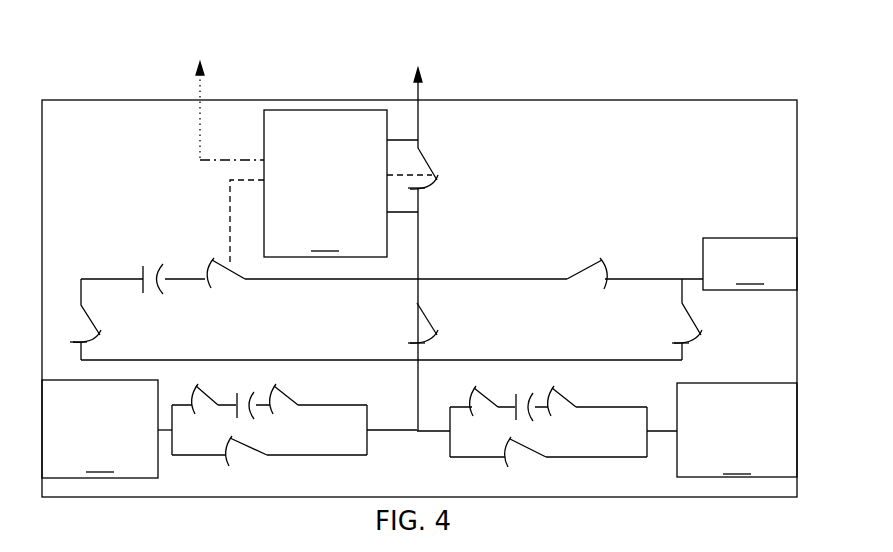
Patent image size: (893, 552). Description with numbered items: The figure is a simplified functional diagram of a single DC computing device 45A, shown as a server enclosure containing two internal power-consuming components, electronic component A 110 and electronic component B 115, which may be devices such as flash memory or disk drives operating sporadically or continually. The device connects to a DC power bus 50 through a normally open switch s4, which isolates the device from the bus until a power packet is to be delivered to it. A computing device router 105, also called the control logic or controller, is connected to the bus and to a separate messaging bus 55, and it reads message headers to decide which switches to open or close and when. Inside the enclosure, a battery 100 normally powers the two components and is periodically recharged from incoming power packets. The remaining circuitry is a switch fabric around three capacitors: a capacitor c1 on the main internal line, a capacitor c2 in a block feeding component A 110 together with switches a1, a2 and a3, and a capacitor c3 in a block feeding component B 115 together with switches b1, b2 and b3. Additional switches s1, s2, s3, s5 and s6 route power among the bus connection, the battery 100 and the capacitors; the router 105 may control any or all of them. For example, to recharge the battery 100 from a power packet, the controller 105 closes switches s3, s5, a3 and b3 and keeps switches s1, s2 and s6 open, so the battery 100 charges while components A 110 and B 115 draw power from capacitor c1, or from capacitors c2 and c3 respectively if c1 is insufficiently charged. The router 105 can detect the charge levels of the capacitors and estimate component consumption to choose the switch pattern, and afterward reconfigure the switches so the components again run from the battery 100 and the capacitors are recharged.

The computing device 45A is at (726, 139).
The DC power bus 50 is at (432, 80).
The messaging bus 55 is at (178, 134).
The computing device router 105 is at (341, 183).
The battery 100 is at (750, 264).
The electronic component A 110 is at (107, 429).
The electronic component B 115 is at (737, 430).
The switch s1 is at (236, 298).
The switch s2 is at (447, 318).
The switch s3 is at (581, 256).
The switch s4 is at (439, 163).
The switch s5 is at (102, 317).
The switch s6 is at (699, 321).
The capacitor c1 is at (143, 251).
The capacitor c2 is at (294, 423).
The capacitor c3 is at (547, 425).
The switch a1 is at (211, 383).
The switch a2 is at (291, 383).
The switch a3 is at (251, 473).
The switch b1 is at (495, 383).
The switch b2 is at (575, 383).
The switch b3 is at (535, 475).